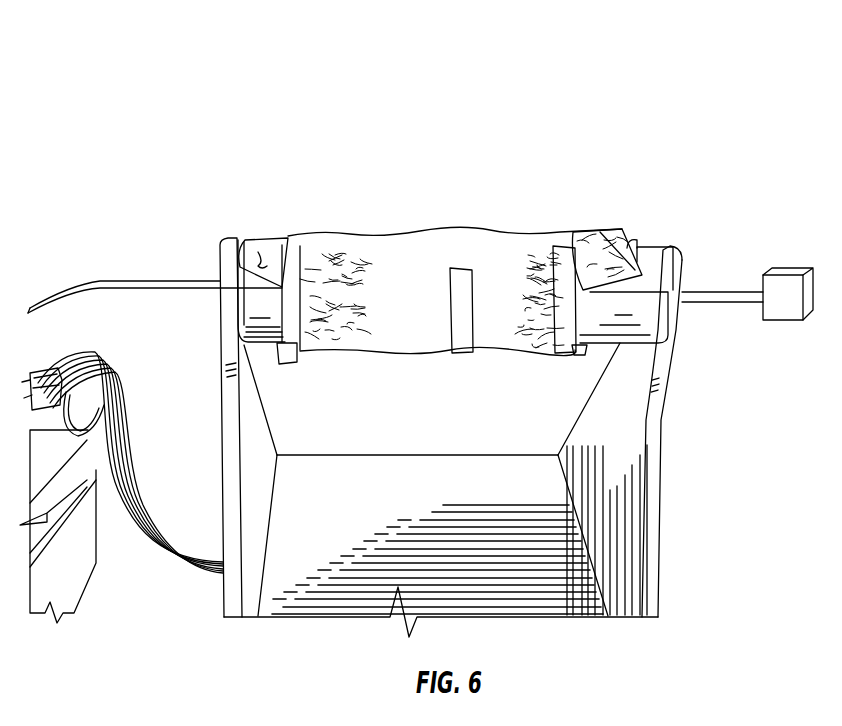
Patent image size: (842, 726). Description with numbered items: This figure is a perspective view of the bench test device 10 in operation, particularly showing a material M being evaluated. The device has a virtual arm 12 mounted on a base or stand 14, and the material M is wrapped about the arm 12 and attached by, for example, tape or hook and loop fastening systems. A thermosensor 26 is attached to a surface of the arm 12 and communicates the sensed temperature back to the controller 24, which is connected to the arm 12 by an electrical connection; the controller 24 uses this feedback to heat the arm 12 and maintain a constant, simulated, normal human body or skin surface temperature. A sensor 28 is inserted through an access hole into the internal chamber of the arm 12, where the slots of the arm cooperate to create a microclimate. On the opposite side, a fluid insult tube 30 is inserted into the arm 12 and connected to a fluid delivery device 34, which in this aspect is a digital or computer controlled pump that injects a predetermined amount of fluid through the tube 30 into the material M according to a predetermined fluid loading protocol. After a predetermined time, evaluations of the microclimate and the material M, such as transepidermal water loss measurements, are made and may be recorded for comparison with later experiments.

The bench test device 10 is at (373, 100).
The virtual arm 12 is at (650, 318).
The stand 14 is at (662, 450).
The controller 24 is at (59, 464).
The thermosensor 26 is at (668, 287).
The sensor 28 is at (87, 282).
The fluid insult tube 30 is at (723, 290).
The fluid delivery device 34 is at (795, 310).
The material M is at (416, 294).